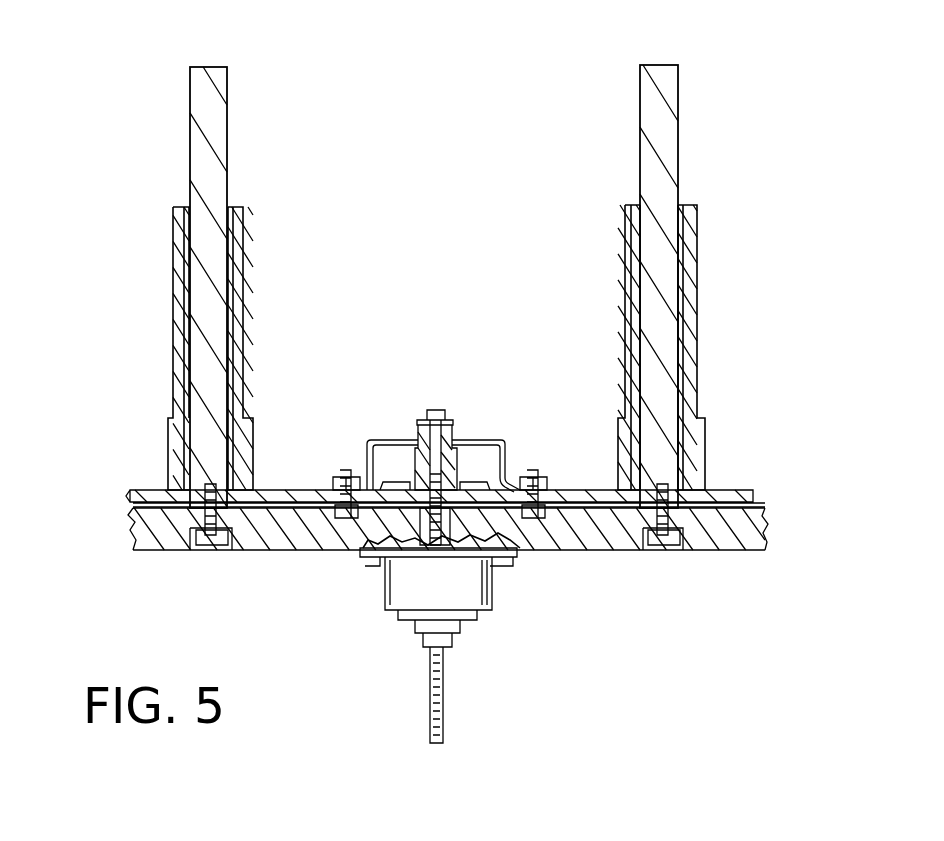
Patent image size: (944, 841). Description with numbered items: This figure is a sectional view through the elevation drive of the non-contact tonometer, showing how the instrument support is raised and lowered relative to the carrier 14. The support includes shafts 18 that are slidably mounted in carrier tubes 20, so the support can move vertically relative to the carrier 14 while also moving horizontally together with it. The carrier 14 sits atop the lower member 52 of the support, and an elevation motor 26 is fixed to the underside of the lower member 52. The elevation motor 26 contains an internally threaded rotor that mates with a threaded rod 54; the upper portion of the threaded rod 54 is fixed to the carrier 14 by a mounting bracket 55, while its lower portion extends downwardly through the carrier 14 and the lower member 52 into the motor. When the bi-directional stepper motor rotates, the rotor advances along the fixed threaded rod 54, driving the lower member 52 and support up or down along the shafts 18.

The carrier 14 is at (288, 492).
The shafts 18 is at (197, 130).
The carrier tubes 20 is at (238, 228).
The elevation motor 26 is at (403, 598).
The lower member 52 is at (262, 548).
The threaded rod 54 is at (443, 690).
The mounting bracket 55 is at (503, 442).